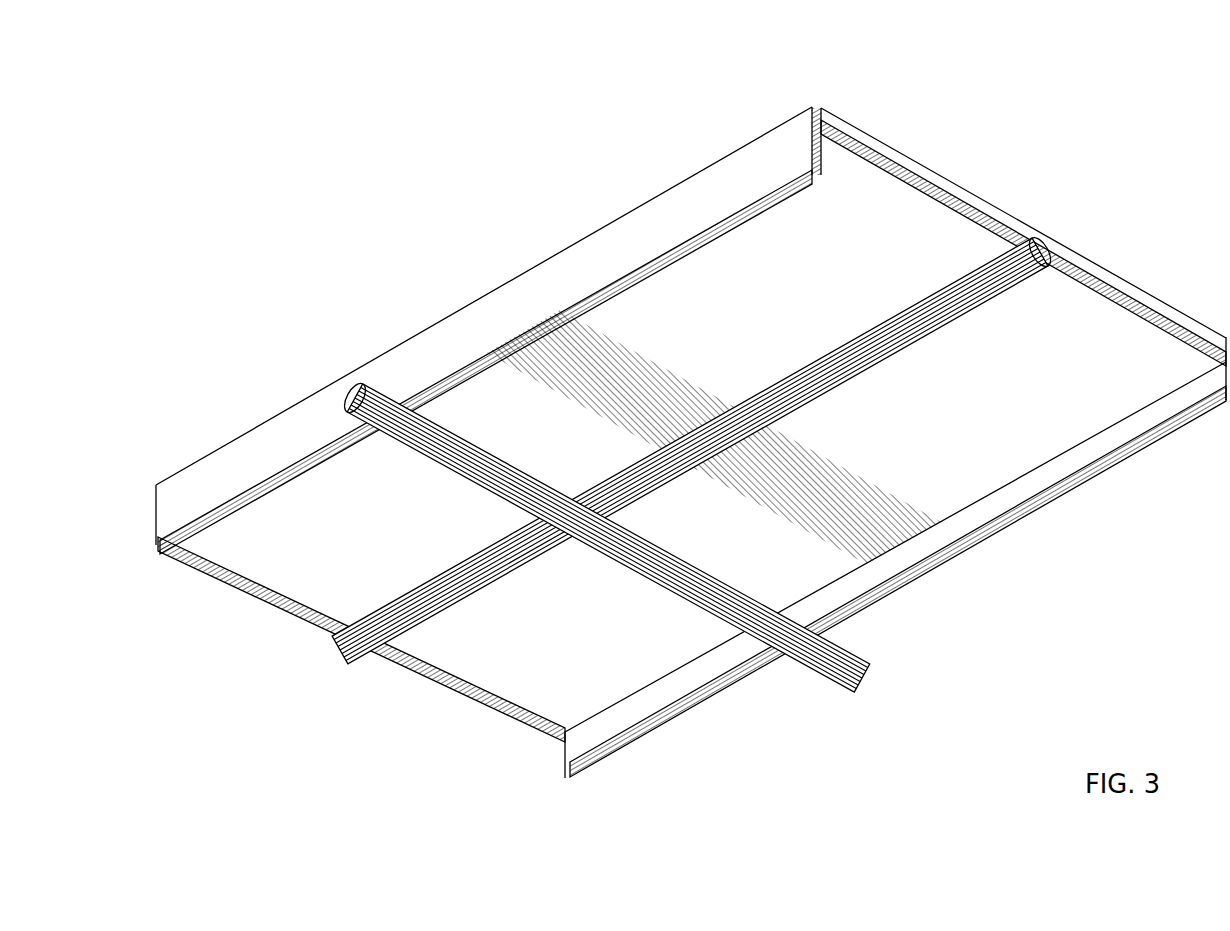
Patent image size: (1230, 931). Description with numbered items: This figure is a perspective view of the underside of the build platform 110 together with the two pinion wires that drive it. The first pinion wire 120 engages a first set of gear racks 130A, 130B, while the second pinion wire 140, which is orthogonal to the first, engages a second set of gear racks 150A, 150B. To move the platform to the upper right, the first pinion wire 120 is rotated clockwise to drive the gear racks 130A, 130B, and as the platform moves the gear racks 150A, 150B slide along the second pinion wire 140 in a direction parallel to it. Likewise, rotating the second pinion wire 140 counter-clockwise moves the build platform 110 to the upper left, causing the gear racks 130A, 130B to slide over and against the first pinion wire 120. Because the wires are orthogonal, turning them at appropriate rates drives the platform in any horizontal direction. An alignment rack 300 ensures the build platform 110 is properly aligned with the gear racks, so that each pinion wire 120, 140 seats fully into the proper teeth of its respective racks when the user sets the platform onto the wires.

The build platform 110 is at (811, 106).
The first pinion wire 120 is at (628, 573).
The first gear rack 130A is at (664, 250).
The first gear rack 130B is at (1000, 540).
The second pinion wire 140 is at (953, 325).
The second gear rack 150A is at (928, 180).
The second gear rack 150B is at (440, 684).
The alignment rack 300 is at (846, 476).